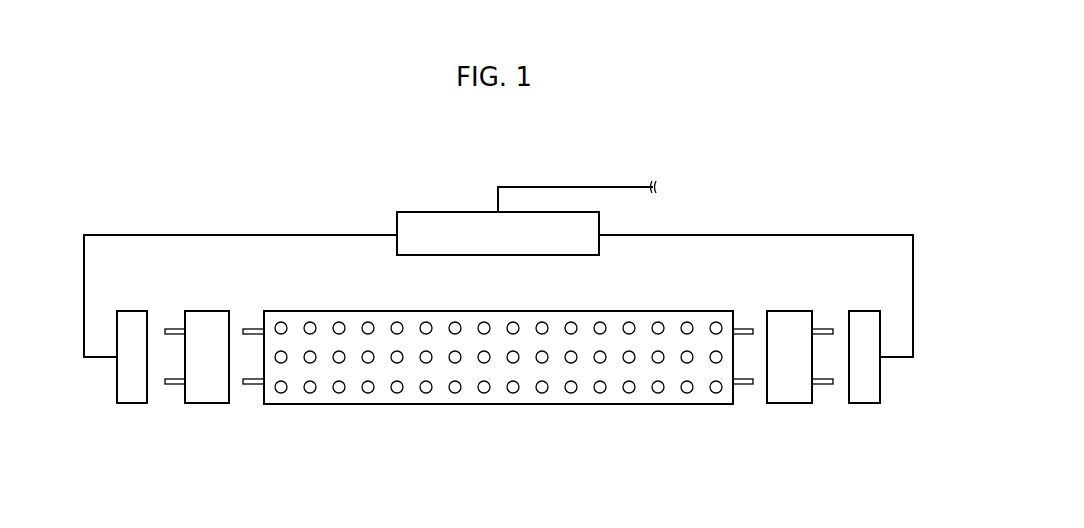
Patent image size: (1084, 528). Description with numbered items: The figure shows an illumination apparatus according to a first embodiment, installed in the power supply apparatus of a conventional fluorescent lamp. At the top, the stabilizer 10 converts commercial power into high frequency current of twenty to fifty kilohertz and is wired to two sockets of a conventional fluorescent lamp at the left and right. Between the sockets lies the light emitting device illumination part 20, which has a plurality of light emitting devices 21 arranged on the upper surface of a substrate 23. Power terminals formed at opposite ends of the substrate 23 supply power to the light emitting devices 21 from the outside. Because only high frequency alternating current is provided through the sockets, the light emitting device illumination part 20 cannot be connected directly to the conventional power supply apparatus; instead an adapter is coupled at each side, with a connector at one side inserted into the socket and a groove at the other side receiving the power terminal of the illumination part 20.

The stabilizer 10 is at (456, 212).
The light emitting device illumination part 20 is at (498, 404).
The light emitting device 21 is at (512, 393).
The substrate 23 is at (567, 404).